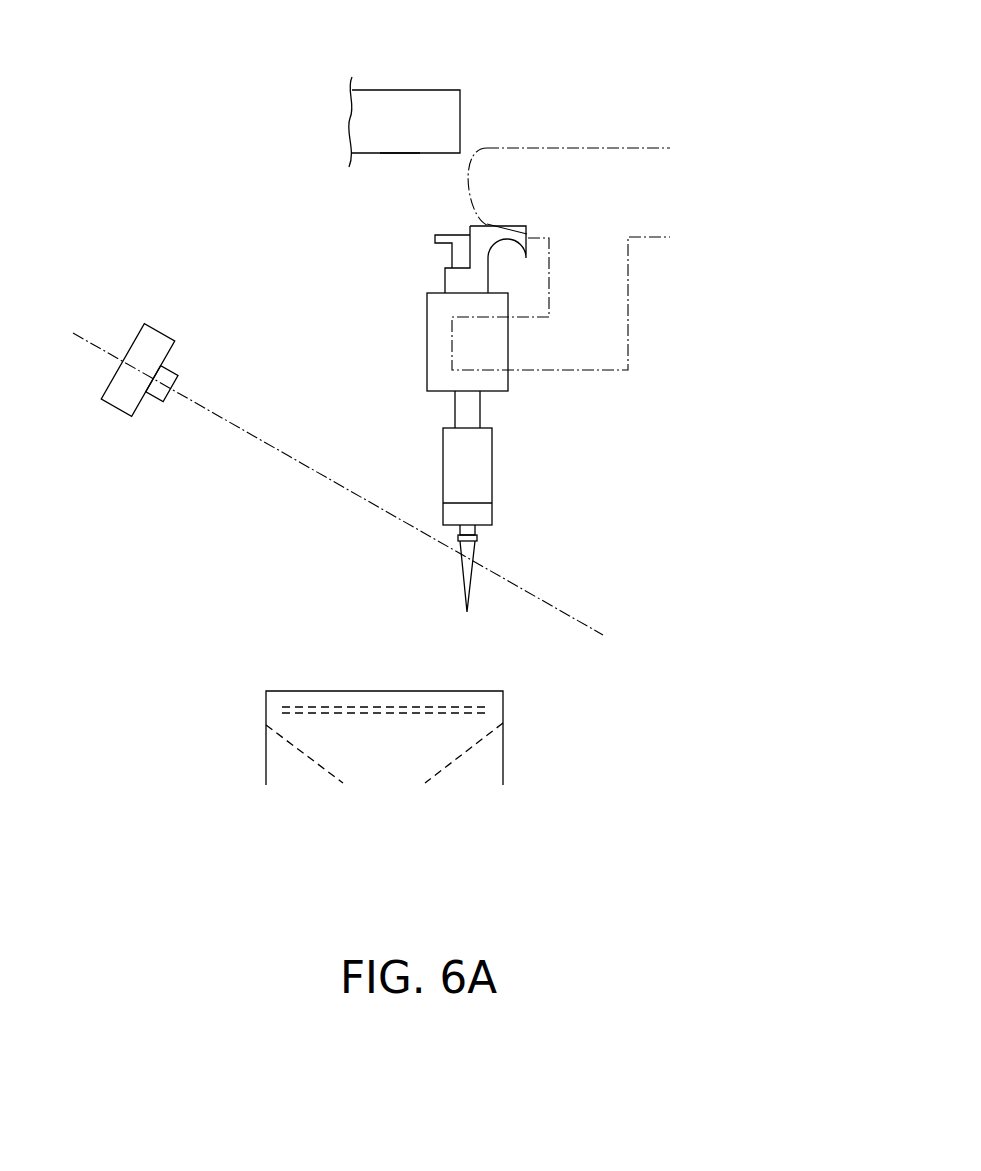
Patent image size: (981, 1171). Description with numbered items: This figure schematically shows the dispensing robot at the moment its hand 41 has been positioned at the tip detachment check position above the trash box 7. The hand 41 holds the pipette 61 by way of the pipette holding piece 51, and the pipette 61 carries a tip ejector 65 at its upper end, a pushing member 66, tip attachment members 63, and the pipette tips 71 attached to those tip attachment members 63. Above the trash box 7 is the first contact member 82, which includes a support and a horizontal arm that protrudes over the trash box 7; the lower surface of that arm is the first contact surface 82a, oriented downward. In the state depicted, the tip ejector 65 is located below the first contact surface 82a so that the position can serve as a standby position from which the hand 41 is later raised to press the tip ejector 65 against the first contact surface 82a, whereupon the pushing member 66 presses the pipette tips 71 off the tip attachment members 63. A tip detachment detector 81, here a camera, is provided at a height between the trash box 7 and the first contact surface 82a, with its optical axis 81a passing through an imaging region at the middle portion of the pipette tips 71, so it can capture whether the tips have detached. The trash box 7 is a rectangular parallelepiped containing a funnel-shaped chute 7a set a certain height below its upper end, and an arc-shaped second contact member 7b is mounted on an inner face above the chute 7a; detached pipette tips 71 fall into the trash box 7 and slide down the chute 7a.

The trash box 7 is at (503, 735).
The chute 7a is at (454, 757).
The second contact member 7b is at (318, 708).
The hand 41 is at (592, 148).
The pipette holding piece 51 is at (427, 345).
The pipette 61 is at (505, 449).
The tip attachment member 63 is at (476, 533).
The tip ejector 65 is at (446, 254).
The pushing member 66 is at (482, 515).
The pipette tip 71 is at (468, 550).
The tip detachment detector 81 is at (161, 332).
The optical axis 81a is at (374, 503).
The first contact member 82 is at (405, 89).
The first contact surface 82a is at (391, 154).